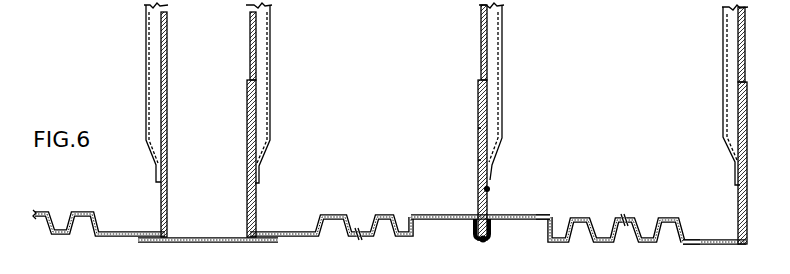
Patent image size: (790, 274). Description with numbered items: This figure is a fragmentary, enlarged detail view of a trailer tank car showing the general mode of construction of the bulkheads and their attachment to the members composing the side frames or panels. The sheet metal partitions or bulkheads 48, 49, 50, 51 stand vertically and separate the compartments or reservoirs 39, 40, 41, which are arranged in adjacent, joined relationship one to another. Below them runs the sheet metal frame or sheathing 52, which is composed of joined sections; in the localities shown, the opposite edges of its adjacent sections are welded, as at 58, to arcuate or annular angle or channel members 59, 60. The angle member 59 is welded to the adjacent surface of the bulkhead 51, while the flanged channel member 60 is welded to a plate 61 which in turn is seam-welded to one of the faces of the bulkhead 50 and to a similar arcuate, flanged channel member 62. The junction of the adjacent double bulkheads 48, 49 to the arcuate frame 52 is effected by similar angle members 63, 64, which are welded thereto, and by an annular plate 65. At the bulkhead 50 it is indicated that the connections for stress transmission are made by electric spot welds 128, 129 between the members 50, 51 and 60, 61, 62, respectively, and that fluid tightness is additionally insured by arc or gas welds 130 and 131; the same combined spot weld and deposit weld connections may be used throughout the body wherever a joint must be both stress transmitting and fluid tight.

The compartment 39 is at (88, 89).
The compartment 40 is at (368, 89).
The compartment 41 is at (616, 84).
The bulkhead 48 is at (149, 41).
The bulkhead 49 is at (271, 49).
The bulkhead 50 is at (503, 48).
The bulkhead 51 is at (746, 47).
The sheet metal frame 52 is at (49, 212).
The weld 58 is at (689, 239).
The angle member 59 is at (730, 246).
The flanged channel member 60 is at (539, 215).
The plate 61 is at (479, 197).
The flanged channel member 62 is at (446, 221).
The angle member 63 is at (168, 161).
The angle member 64 is at (247, 160).
The annular plate 65 is at (228, 243).
The electric spot weld 128 is at (478, 128).
The electric spot weld 129 is at (490, 228).
The arc or gas weld 130 is at (490, 188).
The arc or gas weld 131 is at (484, 243).